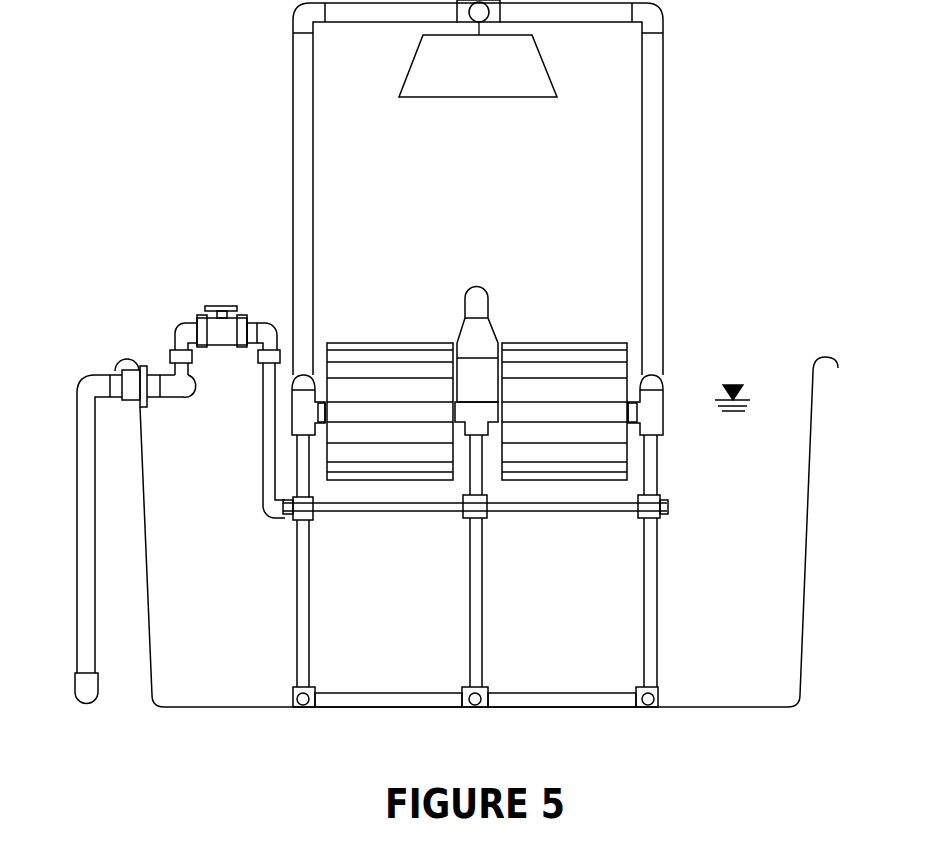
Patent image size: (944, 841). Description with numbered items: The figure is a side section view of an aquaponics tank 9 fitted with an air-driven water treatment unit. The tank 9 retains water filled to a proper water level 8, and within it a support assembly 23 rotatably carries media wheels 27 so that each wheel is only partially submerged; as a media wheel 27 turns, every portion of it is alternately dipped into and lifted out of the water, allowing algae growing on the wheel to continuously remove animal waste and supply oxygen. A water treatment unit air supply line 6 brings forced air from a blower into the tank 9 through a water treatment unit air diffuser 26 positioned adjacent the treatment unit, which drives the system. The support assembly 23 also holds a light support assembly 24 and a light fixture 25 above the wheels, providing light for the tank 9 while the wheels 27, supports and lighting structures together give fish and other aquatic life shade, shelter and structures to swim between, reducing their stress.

The water treatment unit air supply line 6 is at (77, 515).
The water level 8 is at (743, 400).
The tank 9 is at (827, 353).
The support assembly 23 is at (490, 515).
The light support assembly 24 is at (662, 210).
The light fixture 25 is at (477, 97).
The water treatment unit air diffuser 26 is at (412, 507).
The media wheel 27 is at (363, 343).